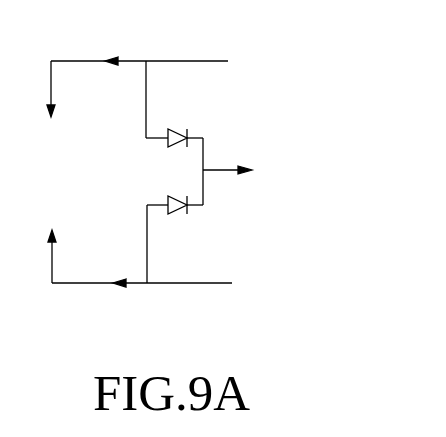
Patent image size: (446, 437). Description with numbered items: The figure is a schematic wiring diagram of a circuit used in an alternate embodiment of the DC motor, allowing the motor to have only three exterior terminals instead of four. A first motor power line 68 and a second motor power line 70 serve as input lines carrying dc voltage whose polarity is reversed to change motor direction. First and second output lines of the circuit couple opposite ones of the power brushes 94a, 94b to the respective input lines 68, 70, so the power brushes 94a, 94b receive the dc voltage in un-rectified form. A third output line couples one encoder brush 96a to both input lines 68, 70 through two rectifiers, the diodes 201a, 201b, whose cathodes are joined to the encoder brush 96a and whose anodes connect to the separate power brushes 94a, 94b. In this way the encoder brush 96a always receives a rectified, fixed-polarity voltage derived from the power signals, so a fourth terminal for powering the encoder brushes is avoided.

The first motor power line 68 is at (200, 61).
The second motor power line 70 is at (200, 283).
The motor power brush 94a is at (74, 106).
The motor power brush 94b is at (79, 242).
The encoder brush 96a is at (250, 171).
The diode 201a is at (207, 109).
The diode 201b is at (178, 213).